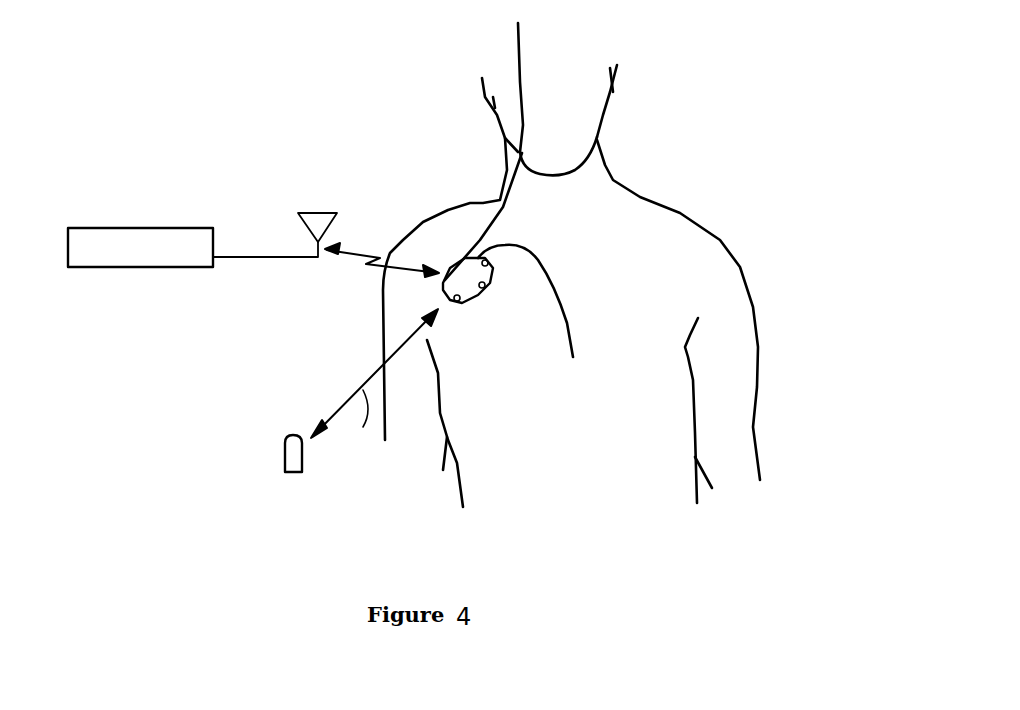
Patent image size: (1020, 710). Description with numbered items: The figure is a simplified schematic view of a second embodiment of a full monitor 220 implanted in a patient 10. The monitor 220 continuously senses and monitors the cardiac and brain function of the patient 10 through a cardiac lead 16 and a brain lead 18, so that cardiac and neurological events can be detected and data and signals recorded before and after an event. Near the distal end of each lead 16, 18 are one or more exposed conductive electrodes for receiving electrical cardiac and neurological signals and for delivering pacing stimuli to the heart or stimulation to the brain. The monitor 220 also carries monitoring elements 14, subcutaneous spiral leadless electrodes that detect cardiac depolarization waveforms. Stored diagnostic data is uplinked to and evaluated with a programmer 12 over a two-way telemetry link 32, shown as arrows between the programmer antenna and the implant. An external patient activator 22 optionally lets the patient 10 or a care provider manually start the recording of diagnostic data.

The patient 10 is at (627, 60).
The programmer 12 is at (160, 232).
The monitoring elements 14 is at (485, 290).
The cardiac lead 16 is at (547, 268).
The brain lead 18 is at (470, 202).
The external patient activator 22 is at (283, 457).
The two-way telemetry link 32 is at (383, 247).
The monitor 220 is at (447, 290).